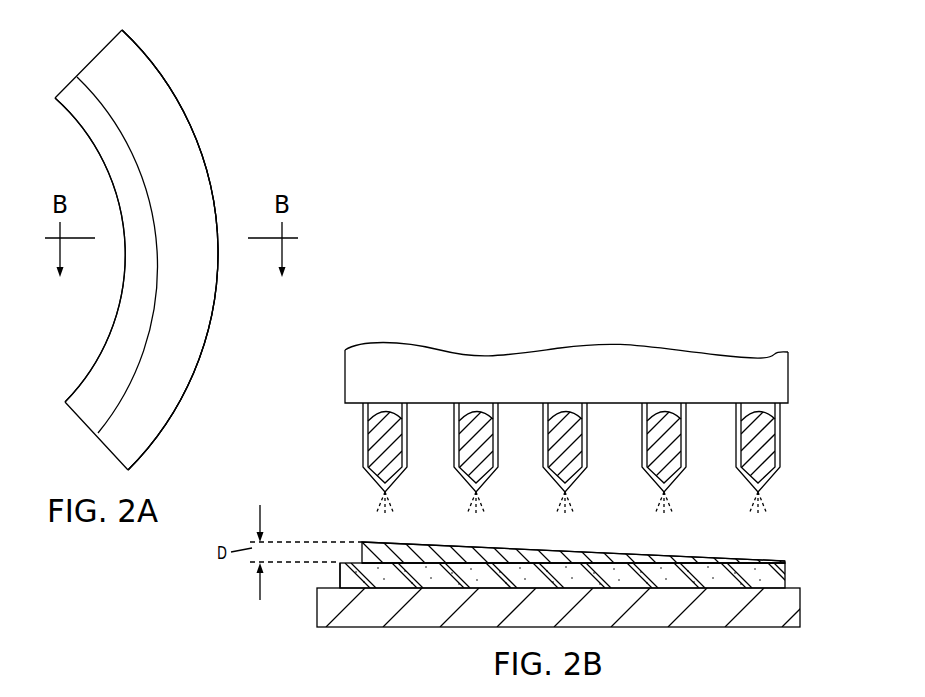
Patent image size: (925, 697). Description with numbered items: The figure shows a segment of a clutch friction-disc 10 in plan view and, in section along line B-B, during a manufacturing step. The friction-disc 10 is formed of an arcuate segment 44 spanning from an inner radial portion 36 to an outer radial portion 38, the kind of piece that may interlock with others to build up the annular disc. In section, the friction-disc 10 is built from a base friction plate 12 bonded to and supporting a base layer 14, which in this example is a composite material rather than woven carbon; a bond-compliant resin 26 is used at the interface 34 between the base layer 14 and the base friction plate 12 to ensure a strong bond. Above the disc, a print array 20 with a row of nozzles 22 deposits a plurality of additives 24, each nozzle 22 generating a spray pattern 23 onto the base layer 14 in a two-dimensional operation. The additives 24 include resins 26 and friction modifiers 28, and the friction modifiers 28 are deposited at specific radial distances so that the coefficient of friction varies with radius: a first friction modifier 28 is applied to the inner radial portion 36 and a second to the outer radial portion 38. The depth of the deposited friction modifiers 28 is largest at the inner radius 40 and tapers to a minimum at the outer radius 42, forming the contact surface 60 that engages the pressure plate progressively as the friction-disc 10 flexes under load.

In FIG. 2A, the friction-disc 10 is at (228, 90).
In FIG. 2A, the outer radial portion 38 is at (205, 158).
In FIG. 2A, the inner radial portion 36 is at (107, 337).
In FIG. 2A, the interlocking arcuate segment 44 is at (212, 335).
In FIG. 2B, the print array 20 is at (567, 382).
In FIG. 2B, the nozzles 22 is at (770, 297).
In FIG. 2B, the spray pattern 23 is at (380, 514).
In FIG. 2B, the friction modifier 28 is at (568, 490).
In FIG. 2B, the additives 24 is at (665, 518).
In FIG. 2B, the resin 26 is at (758, 520).
In FIG. 2B, the inner radius 40 is at (420, 542).
In FIG. 2B, the contact surface 60 is at (507, 538).
In FIG. 2B, the outer radius 42 is at (623, 556).
In FIG. 2B, the base layer 14 is at (665, 588).
In FIG. 2B, the base friction plate 12 is at (742, 607).
In FIG. 2B, the interface 34 is at (322, 578).